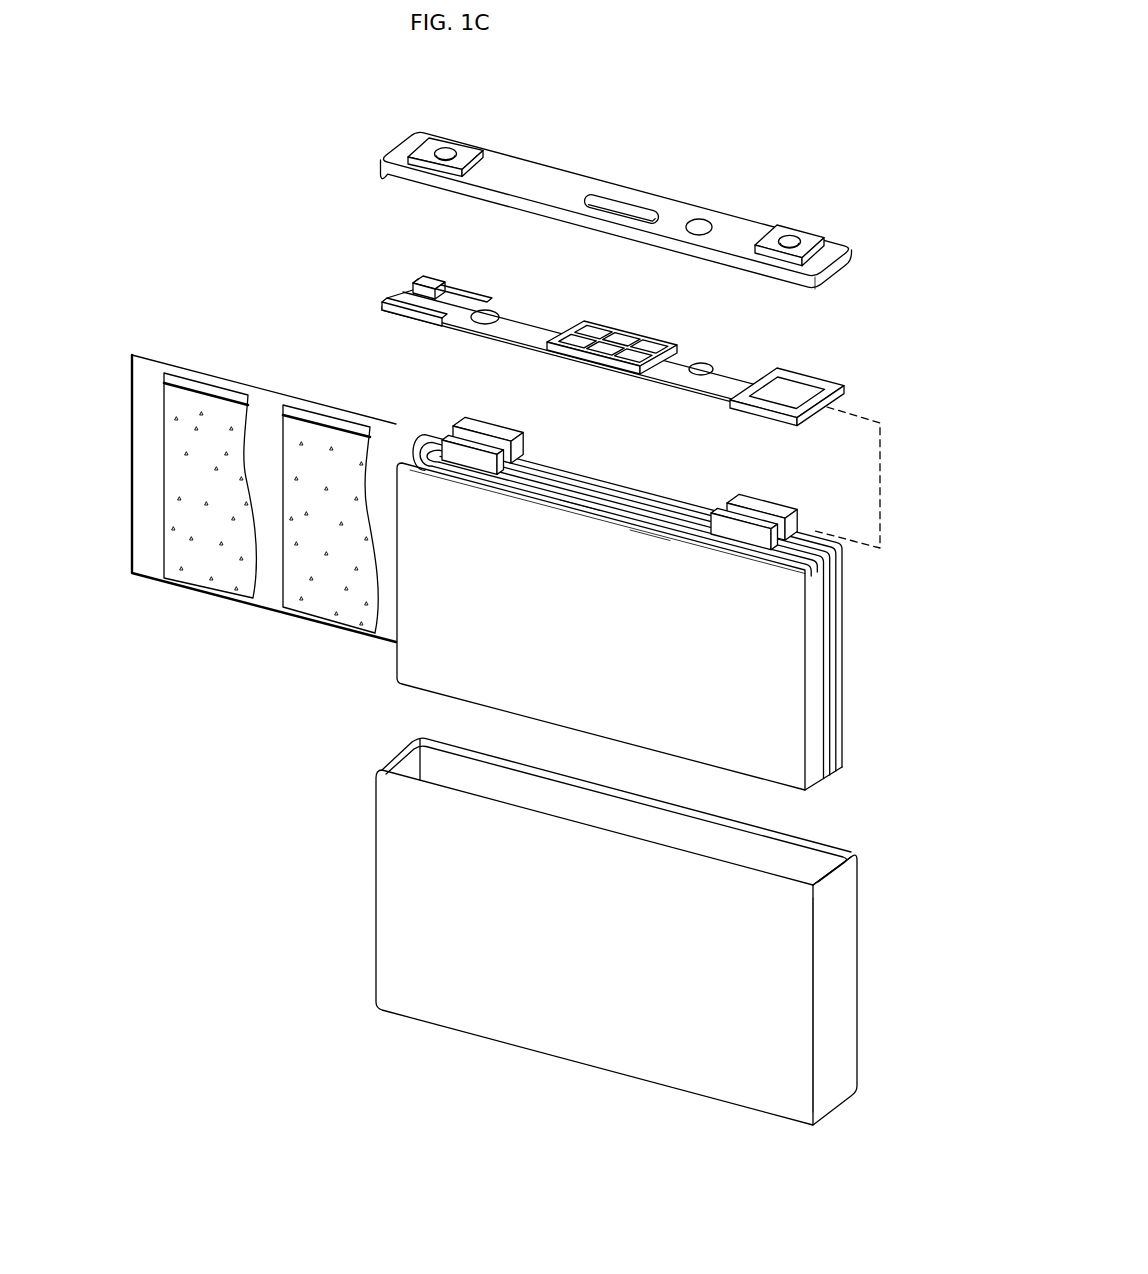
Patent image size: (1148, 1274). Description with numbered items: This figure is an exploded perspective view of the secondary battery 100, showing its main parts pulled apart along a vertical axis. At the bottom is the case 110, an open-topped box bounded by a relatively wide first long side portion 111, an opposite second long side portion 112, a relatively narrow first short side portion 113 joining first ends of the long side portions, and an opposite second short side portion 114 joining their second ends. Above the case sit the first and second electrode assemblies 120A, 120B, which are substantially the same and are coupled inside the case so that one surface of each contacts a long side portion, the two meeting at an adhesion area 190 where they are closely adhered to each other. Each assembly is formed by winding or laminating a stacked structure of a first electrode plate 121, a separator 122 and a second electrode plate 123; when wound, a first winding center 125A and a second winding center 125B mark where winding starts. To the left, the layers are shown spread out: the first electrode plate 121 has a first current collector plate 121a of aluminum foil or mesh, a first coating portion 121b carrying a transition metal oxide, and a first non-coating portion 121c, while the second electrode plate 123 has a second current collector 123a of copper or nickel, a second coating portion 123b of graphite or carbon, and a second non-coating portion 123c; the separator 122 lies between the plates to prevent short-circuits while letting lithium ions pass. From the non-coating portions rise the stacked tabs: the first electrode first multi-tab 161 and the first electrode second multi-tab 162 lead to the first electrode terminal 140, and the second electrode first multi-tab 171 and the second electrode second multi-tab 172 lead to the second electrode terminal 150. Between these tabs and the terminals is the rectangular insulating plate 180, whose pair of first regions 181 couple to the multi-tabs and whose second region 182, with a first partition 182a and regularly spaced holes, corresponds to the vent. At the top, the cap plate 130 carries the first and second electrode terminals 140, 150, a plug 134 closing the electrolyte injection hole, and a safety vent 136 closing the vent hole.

The secondary battery 100 is at (914, 158).
The case 110 is at (865, 1028).
The first long side portion 111 is at (844, 844).
The second long side portion 112 is at (603, 1061).
The first short side portion 113 is at (393, 752).
The second short side portion 114 is at (850, 931).
The first electrode assembly 120A is at (848, 648).
The second electrode assembly 120B is at (830, 690).
The first electrode plate 121 is at (187, 375).
The first current collector plate 121a is at (162, 405).
The first coating portion 121b is at (203, 438).
The first non-coating portion 121c is at (212, 390).
The separator 122 is at (377, 622).
The second electrode plate 123 is at (293, 403).
The second current collector 123a is at (283, 443).
The second coating portion 123b is at (327, 518).
The second non-coating portion 123c is at (307, 415).
The first winding center 125A is at (588, 477).
The second winding center 125B is at (650, 517).
The cap plate 130 is at (860, 250).
The plug 134 is at (700, 220).
The safety vent 136 is at (623, 207).
The first electrode terminal 140 is at (458, 137).
The second electrode terminal 150 is at (807, 227).
The first electrode first multi-tab 161 is at (487, 427).
The first electrode second multi-tab 162 is at (447, 437).
The second electrode first multi-tab 171 is at (768, 500).
The second electrode second multi-tab 172 is at (723, 508).
The insulating plate 180 is at (833, 380).
The first region 181 is at (527, 316).
The second region 182 is at (633, 320).
The first partition 182a is at (717, 358).
The adhesion area 190 is at (543, 478).